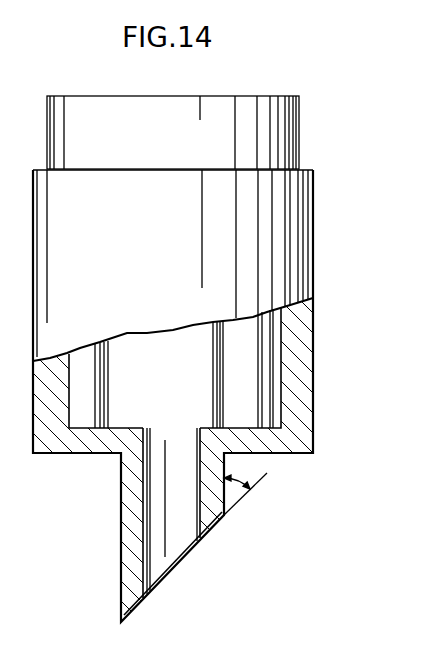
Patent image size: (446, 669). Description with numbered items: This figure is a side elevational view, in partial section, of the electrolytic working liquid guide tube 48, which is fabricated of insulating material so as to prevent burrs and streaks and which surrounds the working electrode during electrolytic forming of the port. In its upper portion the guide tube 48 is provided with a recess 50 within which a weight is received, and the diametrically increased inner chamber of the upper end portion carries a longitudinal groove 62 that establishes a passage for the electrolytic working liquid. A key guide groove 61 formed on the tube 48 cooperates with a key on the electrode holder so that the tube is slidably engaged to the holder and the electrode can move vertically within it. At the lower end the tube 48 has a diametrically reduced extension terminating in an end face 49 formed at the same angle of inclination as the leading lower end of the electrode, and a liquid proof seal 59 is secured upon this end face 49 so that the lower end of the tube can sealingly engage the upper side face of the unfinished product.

The electrolytic working liquid guide tube 48 is at (223, 334).
The recess 50 is at (284, 123).
The key guide groove 61 is at (268, 387).
The longitudinal groove 62 is at (103, 400).
The end face 49 is at (127, 607).
The liquid proof seal 59 is at (216, 522).